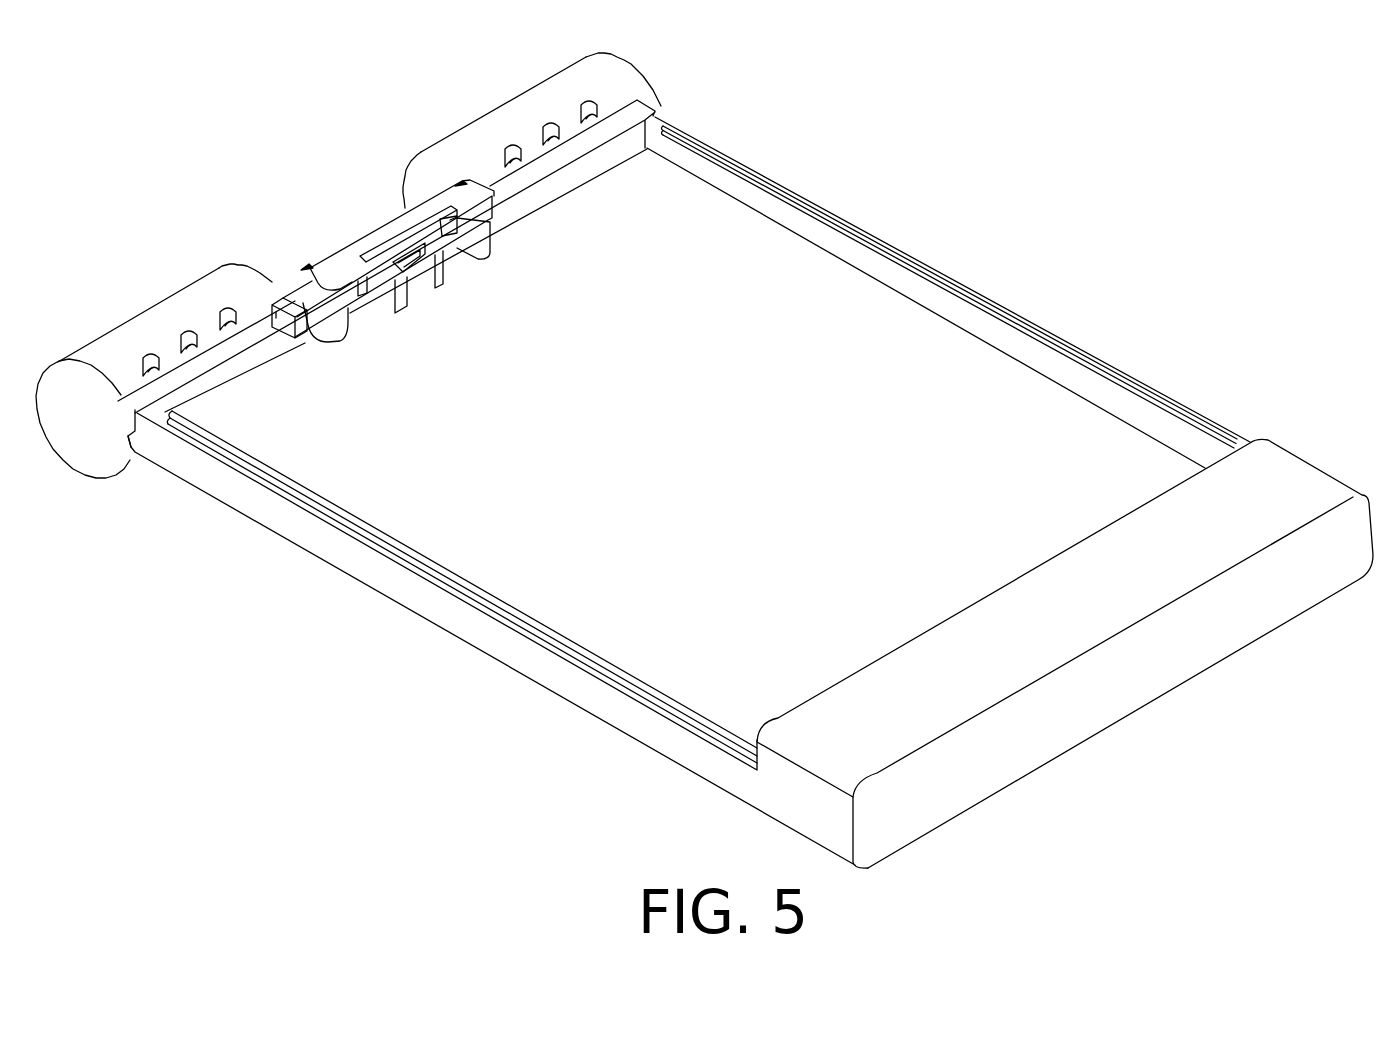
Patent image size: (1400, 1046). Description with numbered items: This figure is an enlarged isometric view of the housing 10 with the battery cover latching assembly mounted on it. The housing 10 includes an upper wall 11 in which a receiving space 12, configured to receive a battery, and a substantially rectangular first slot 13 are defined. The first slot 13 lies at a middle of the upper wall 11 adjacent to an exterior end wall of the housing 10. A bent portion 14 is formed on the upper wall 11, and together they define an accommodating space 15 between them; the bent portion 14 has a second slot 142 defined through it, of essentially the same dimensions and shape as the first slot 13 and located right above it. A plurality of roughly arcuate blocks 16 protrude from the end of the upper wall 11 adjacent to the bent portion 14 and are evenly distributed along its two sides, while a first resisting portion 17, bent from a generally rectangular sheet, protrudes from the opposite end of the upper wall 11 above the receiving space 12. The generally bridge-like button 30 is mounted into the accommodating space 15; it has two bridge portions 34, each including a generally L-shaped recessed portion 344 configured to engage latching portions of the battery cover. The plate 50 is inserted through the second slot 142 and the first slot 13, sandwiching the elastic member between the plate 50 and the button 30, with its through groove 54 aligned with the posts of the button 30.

The housing 10 is at (1122, 373).
The upper wall 11 is at (163, 420).
The receiving space 12 is at (987, 392).
The first slot 13 is at (381, 287).
The bent portion 14 is at (343, 262).
The second slot 142 is at (407, 237).
The accommodating space 15 is at (352, 303).
The blocks 16 is at (147, 357).
The first resisting portion 17 is at (1260, 490).
The button 30 is at (294, 290).
The bridge portions 34 is at (285, 298).
The recessed portion 344 is at (277, 315).
The plate 50 is at (458, 238).
The through groove 54 is at (420, 265).